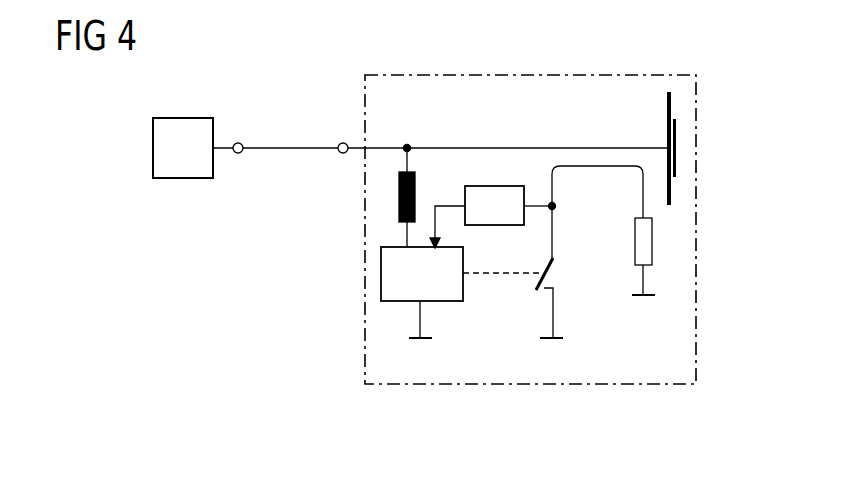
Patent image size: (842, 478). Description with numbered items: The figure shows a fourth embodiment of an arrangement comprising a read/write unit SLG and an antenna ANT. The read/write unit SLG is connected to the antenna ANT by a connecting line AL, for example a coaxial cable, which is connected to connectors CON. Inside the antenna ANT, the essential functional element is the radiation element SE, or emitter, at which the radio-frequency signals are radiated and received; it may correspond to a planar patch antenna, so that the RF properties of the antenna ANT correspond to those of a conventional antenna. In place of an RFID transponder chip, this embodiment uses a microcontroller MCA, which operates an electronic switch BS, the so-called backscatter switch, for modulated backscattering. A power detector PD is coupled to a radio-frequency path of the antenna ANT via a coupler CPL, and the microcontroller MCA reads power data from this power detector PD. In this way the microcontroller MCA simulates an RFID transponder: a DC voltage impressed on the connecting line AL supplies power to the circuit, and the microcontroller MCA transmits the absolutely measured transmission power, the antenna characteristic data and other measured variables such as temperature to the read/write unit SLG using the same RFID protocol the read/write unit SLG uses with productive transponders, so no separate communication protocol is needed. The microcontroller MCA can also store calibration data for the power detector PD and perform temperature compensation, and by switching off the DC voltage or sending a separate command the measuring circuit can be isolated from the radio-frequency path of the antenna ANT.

The read/write unit SLG is at (153, 148).
The connecting line AL is at (292, 146).
The connectors CON is at (238, 153).
The antenna ANT is at (521, 384).
The power detector PD is at (497, 186).
The coupler CPL is at (592, 167).
The microcontroller MCA is at (381, 274).
The electronic switch BS is at (555, 262).
The radiation element SE is at (677, 160).